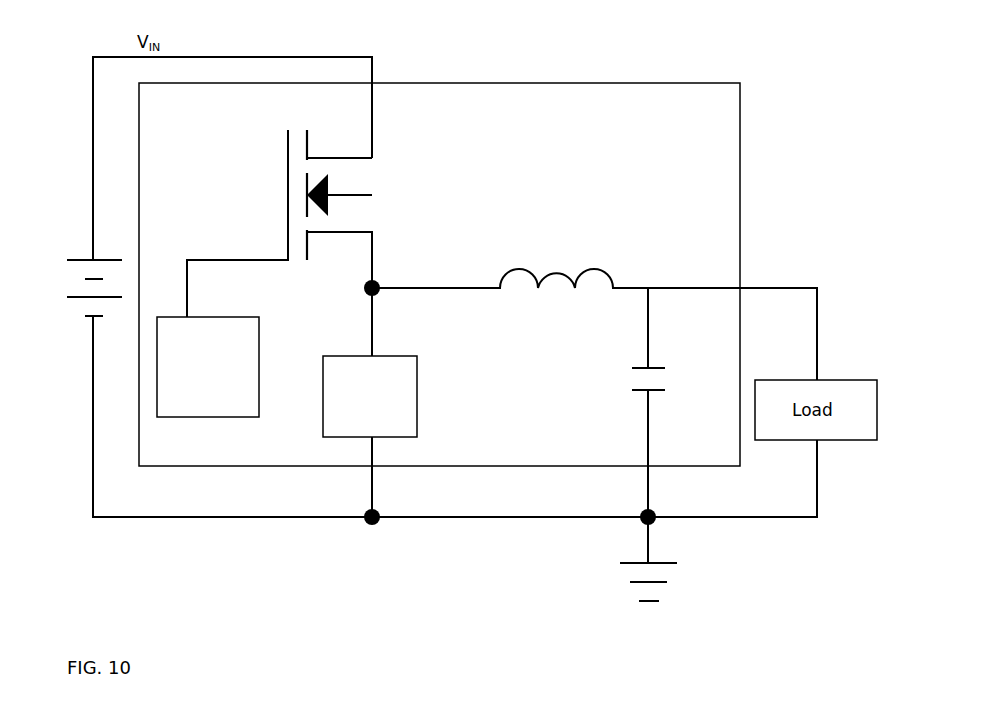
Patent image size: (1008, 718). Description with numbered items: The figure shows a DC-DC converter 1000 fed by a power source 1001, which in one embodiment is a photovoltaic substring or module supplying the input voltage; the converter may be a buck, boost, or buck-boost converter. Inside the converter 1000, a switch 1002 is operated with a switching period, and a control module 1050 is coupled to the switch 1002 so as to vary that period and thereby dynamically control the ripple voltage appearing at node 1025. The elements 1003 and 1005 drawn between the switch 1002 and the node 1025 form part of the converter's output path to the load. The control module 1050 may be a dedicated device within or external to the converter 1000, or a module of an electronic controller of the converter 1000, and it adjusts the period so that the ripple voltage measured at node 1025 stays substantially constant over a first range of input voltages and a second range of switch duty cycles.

The DC-DC converter 1000 is at (494, 83).
The power source 1001 is at (77, 270).
The switch 1002 is at (279, 223).
The inductor / switching element 1003 is at (570, 386).
The output capacitor 1005 is at (668, 444).
The node 1025 is at (766, 287).
The control module 1050 is at (208, 367).